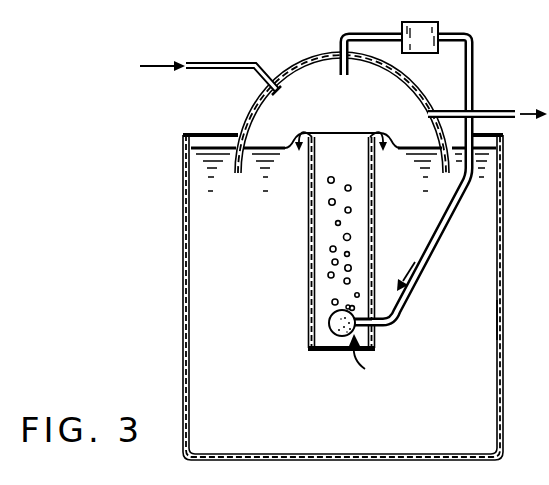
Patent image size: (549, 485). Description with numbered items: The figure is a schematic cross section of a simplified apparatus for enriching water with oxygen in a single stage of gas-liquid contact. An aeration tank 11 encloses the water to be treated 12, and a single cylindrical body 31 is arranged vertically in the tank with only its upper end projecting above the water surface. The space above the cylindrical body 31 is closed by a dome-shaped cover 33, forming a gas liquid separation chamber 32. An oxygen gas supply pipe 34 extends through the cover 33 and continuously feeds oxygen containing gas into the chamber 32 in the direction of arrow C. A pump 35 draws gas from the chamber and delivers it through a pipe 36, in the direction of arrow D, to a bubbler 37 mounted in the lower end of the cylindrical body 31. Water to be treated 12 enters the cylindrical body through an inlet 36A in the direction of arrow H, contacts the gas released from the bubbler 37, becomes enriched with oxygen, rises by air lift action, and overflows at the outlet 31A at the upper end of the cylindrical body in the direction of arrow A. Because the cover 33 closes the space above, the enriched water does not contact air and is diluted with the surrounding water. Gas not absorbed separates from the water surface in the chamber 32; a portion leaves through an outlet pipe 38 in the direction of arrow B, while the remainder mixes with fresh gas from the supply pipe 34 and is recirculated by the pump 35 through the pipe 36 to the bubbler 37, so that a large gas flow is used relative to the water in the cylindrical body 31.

The aeration tank 11 is at (489, 251).
The water to be treated 12 is at (500, 322).
The cylindrical body 31 is at (308, 216).
The outlet 31A is at (357, 144).
The gas liquid separation chamber 32 is at (352, 110).
The dome-shaped cover 33 is at (311, 64).
The oxygen gas supply pipe 34 is at (230, 63).
The pump 35 is at (420, 54).
The pipe 36 is at (474, 92).
The inlet 36A is at (332, 352).
The bubbler 37 is at (329, 323).
The outlet pipe 38 is at (486, 110).